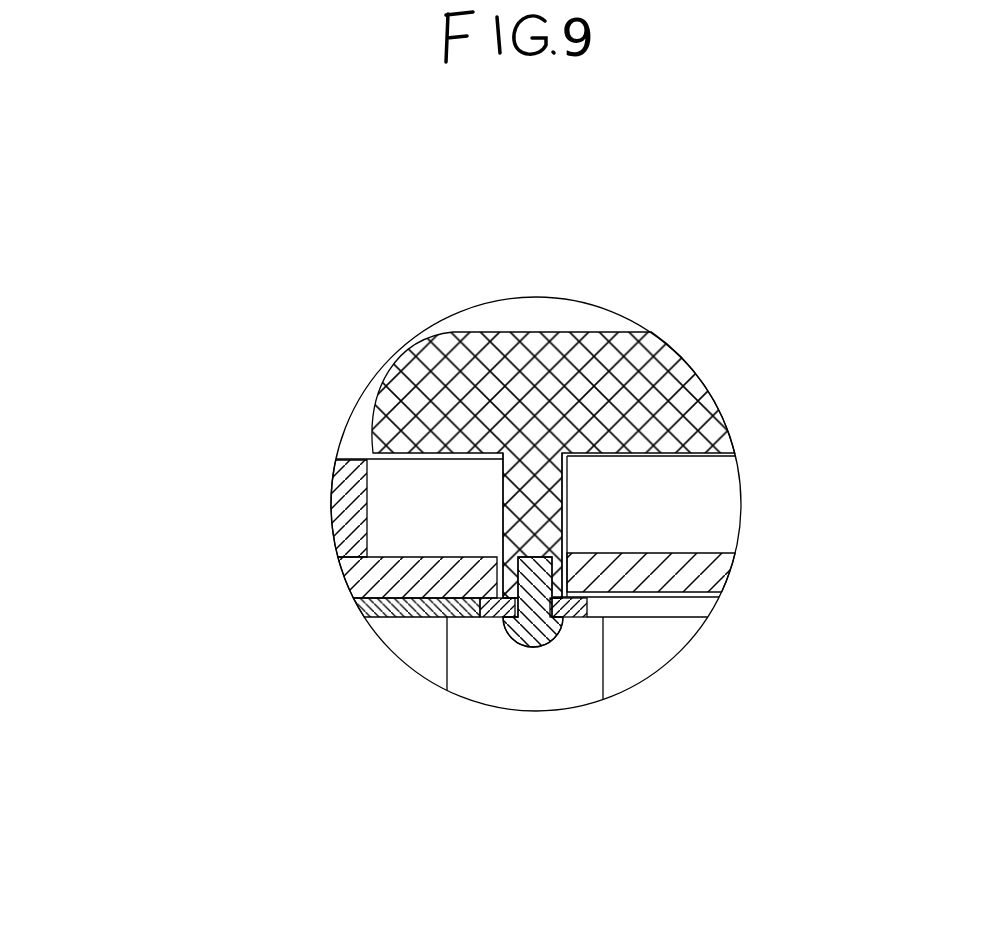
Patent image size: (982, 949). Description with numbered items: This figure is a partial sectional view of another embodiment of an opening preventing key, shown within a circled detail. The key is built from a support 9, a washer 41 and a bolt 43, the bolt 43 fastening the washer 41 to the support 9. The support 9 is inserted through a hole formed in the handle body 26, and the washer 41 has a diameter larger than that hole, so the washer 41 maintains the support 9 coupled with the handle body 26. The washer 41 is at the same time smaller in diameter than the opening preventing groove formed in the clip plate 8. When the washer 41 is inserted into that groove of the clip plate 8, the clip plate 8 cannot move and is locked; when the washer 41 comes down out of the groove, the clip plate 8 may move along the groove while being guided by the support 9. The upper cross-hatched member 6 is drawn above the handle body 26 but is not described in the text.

The crosshatched body 6 is at (530, 400).
The handle body 26 is at (333, 494).
The support 9 is at (515, 510).
The bolt 43 is at (530, 648).
The clip plate 8 is at (387, 620).
The washer 41 is at (587, 605).